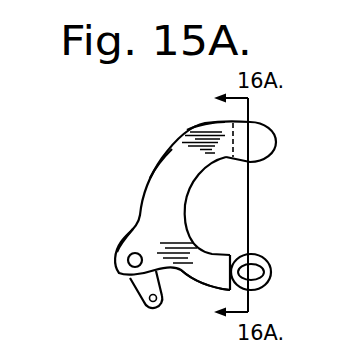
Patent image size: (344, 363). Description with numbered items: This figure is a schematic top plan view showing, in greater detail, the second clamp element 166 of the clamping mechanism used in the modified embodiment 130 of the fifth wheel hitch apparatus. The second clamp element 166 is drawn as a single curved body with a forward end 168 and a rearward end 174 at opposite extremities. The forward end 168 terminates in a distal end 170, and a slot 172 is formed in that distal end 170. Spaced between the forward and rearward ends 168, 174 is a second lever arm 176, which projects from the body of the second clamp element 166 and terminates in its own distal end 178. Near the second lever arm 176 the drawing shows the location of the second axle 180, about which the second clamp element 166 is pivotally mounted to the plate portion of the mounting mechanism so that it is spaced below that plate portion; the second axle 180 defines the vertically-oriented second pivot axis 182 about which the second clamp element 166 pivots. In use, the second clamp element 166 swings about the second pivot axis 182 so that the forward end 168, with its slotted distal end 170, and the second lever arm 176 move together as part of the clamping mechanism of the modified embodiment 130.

The modified embodiment 130 is at (112, 166).
The second clamp element 166 is at (158, 166).
The forward end 168 is at (190, 282).
The distal end 170 is at (272, 272).
The slot 172 is at (259, 265).
The rearward end 174 is at (198, 128).
The second lever arm 176 is at (125, 240).
The distal end 178 is at (153, 307).
The second axle 180 is at (87, 280).
The second pivot axis 182 is at (131, 267).